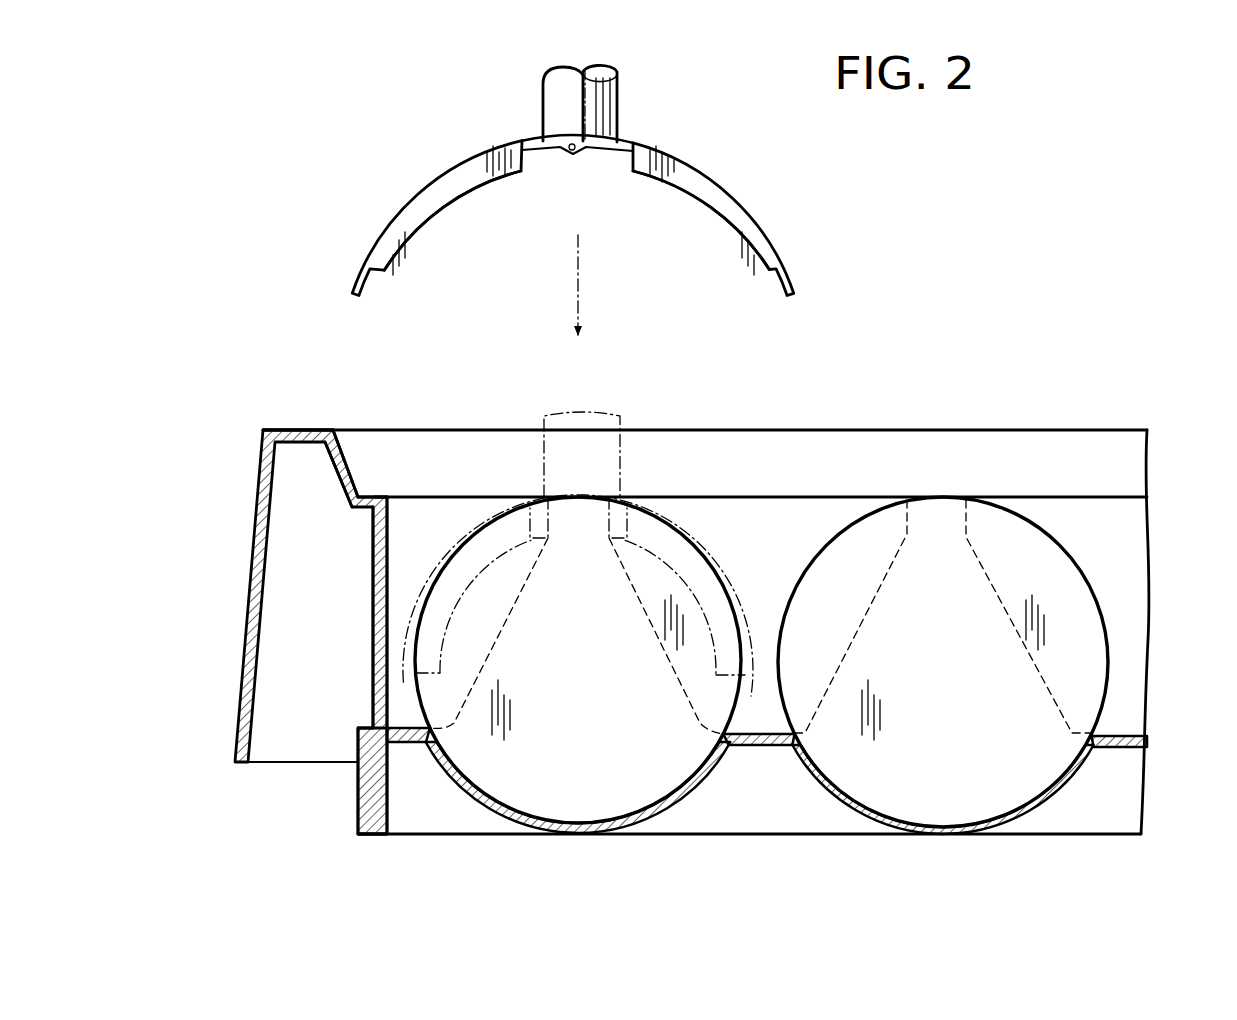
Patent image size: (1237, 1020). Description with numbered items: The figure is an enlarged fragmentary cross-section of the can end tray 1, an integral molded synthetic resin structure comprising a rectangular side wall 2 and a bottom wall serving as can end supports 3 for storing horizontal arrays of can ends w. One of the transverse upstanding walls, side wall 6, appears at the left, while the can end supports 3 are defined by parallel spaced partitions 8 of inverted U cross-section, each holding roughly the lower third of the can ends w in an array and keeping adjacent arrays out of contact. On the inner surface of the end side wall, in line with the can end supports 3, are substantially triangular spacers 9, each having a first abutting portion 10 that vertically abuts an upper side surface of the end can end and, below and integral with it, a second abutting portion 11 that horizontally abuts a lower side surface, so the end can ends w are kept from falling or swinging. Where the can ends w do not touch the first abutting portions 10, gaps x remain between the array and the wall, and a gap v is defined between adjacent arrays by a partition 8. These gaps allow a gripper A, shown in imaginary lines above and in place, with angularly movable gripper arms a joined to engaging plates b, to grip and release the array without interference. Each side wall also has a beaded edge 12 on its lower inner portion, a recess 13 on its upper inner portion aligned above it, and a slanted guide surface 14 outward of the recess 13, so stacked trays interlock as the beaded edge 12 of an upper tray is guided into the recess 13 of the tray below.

The can end tray 1 is at (272, 380).
The side wall 2 is at (1115, 545).
The can end supports 3 is at (700, 790).
The side wall 6 is at (250, 572).
The partitions 8 is at (760, 752).
The spacers 9 is at (580, 540).
The first abutting portion 10 is at (622, 627).
The second abutting portion 11 is at (579, 775).
The beaded edge 12 is at (383, 836).
The recess 13 is at (377, 490).
The slanted guide surface 14 is at (342, 443).
The gripper A is at (647, 105).
The gripper arms a is at (420, 170).
The engaging plates b is at (423, 202).
The gaps x is at (514, 582).
The gap v is at (790, 548).
The can ends w is at (505, 783).